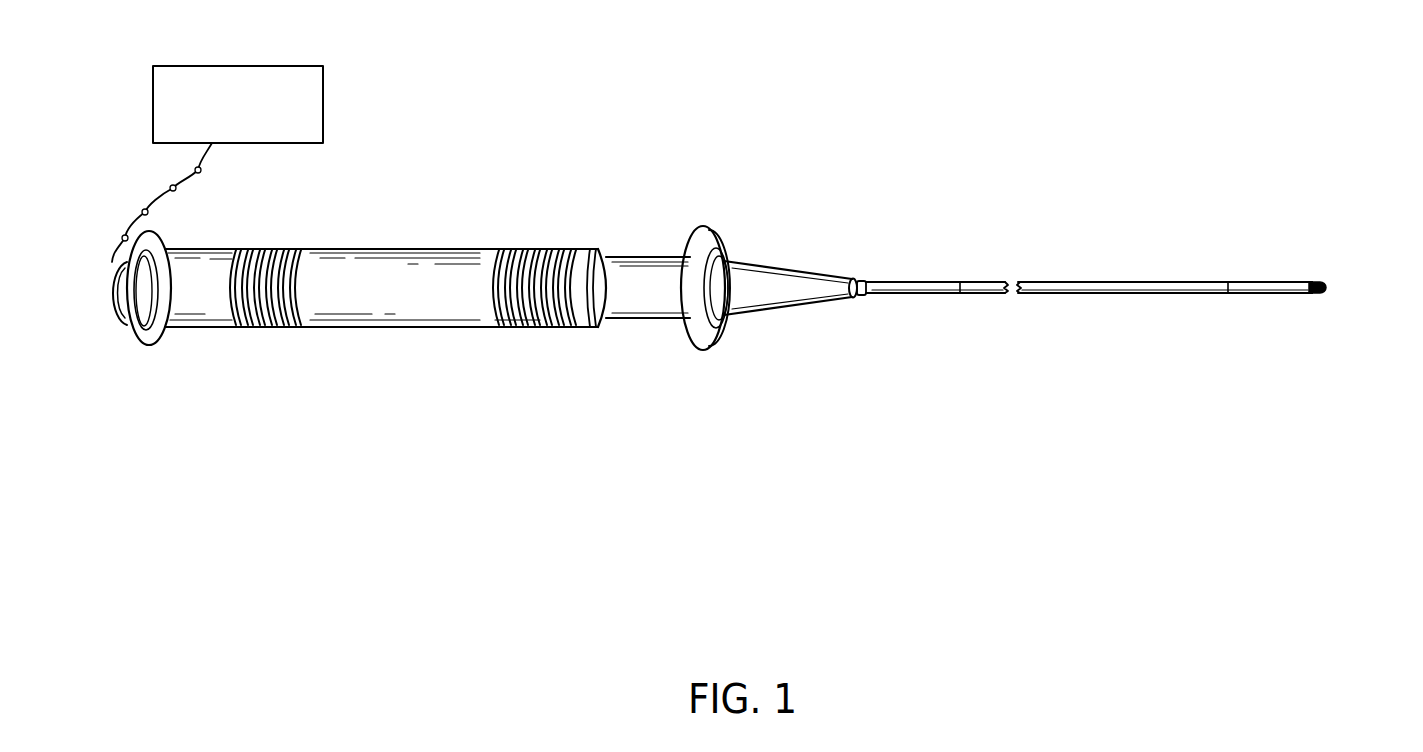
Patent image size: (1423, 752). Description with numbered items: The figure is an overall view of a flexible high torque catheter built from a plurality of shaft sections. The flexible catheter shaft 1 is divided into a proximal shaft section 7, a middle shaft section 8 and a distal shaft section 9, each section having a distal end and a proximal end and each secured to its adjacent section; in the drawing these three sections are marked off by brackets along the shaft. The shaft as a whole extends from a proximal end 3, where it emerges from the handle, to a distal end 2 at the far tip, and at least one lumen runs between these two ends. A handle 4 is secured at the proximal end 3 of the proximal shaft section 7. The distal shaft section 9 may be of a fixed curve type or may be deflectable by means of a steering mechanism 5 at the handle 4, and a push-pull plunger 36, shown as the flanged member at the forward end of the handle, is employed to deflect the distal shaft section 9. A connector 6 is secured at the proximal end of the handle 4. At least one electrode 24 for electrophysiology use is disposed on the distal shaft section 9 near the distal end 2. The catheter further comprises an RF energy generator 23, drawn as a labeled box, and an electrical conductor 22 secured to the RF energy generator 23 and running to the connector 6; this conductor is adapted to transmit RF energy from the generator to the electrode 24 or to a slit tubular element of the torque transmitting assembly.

The flexible catheter shaft 1 is at (1032, 262).
The distal end 2 is at (1330, 272).
The proximal end 3 is at (861, 277).
The handle 4 is at (432, 335).
The steering mechanism 5 is at (657, 323).
The connector 6 is at (124, 328).
The proximal shaft section 7 is at (960, 327).
The middle shaft section 8 is at (1227, 357).
The distal shaft section 9 is at (1330, 325).
The electrical conductor 22 is at (157, 202).
The RF energy generator 23 is at (318, 80).
The electrode 24 is at (1312, 277).
The push-pull plunger 36 is at (715, 357).